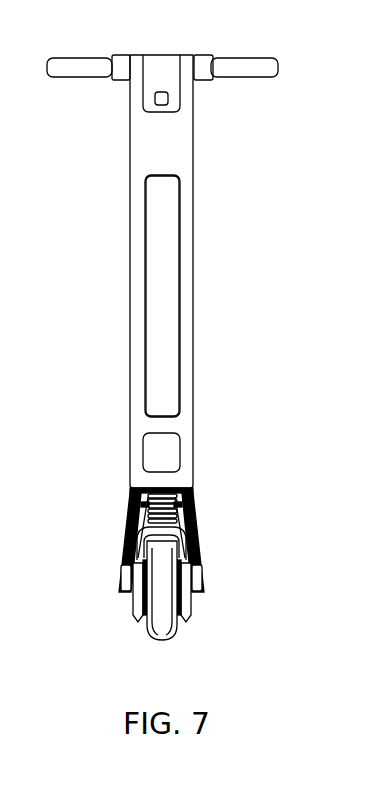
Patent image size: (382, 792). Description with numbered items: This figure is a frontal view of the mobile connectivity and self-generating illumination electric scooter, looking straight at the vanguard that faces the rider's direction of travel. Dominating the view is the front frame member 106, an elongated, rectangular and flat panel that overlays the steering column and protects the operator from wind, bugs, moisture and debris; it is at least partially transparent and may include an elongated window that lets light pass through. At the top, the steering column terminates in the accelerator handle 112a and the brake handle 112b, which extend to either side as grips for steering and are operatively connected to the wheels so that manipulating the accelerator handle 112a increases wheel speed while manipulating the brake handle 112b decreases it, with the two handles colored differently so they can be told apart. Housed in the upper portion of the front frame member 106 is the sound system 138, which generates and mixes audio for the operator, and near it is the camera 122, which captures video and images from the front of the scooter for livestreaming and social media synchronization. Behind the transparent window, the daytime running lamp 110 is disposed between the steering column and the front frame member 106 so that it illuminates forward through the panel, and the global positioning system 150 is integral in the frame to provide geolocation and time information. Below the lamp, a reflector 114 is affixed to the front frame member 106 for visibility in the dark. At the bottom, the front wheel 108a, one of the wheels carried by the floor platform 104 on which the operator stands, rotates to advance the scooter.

The floor platform 104 is at (206, 545).
The front frame member 106 is at (193, 253).
The wheel 108a is at (160, 620).
The daytime running lamp 110 is at (163, 320).
The accelerator handle 112a is at (50, 64).
The brake handle 112b is at (260, 62).
The reflector 114 is at (172, 457).
The camera 122 is at (160, 107).
The sound system 138 is at (165, 70).
The global positioning system 150 is at (165, 152).